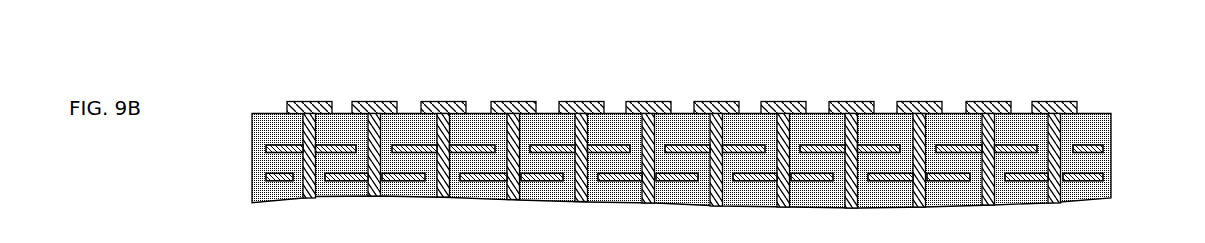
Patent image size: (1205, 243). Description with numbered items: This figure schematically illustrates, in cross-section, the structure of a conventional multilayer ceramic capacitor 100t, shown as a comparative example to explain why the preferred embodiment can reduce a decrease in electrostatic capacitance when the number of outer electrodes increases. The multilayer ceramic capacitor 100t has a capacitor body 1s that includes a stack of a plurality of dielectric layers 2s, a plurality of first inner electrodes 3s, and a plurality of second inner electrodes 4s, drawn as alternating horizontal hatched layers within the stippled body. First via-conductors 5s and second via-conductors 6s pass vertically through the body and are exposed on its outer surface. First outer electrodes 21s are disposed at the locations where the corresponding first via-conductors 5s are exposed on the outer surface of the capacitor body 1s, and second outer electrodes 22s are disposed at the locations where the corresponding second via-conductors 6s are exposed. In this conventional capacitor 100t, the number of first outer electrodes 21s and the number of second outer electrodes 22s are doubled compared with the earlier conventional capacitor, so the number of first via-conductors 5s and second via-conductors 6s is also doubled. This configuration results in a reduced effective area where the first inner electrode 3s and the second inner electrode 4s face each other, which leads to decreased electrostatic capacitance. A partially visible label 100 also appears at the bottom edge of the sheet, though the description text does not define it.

The multilayer ceramic capacitor 100t is at (262, 59).
The capacitor body 1s is at (1094, 110).
The dielectric layers 2s is at (1068, 164).
The first inner electrodes 3s is at (266, 177).
The second inner electrodes 4s is at (266, 148).
The first via-conductors 5s is at (303, 133).
The second via-conductors 6s is at (368, 131).
The first outer electrodes 21s is at (304, 100).
The second outer electrodes 22s is at (371, 101).
The multilayer ceramic capacitor 100 is at (257, 239).